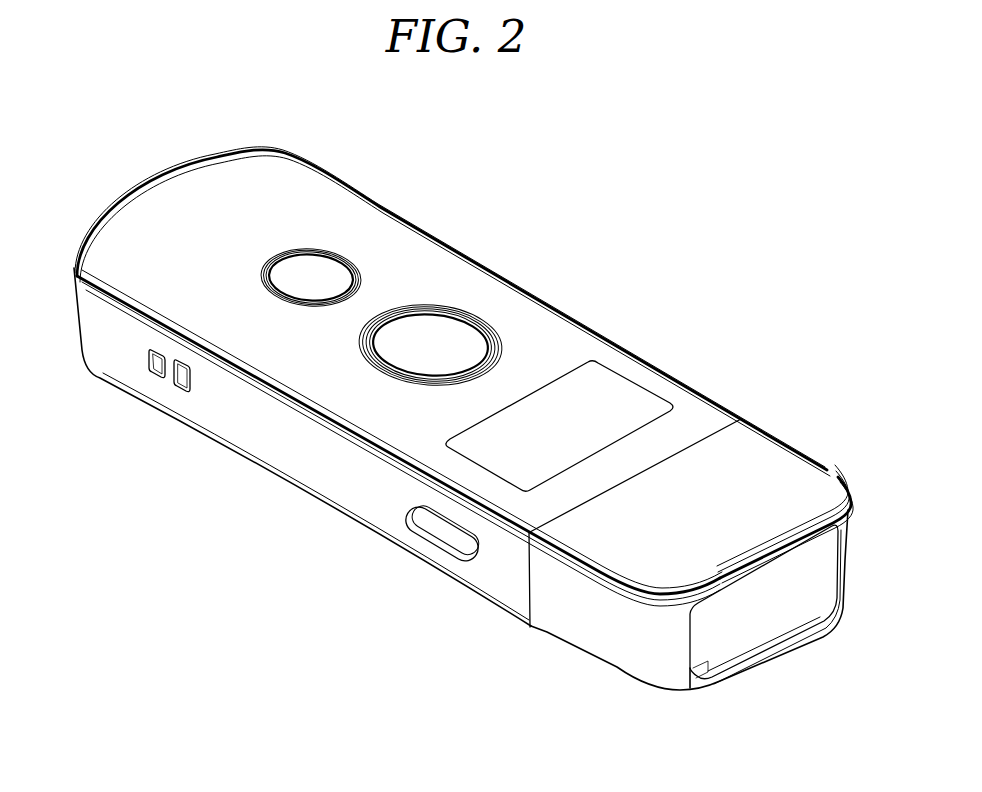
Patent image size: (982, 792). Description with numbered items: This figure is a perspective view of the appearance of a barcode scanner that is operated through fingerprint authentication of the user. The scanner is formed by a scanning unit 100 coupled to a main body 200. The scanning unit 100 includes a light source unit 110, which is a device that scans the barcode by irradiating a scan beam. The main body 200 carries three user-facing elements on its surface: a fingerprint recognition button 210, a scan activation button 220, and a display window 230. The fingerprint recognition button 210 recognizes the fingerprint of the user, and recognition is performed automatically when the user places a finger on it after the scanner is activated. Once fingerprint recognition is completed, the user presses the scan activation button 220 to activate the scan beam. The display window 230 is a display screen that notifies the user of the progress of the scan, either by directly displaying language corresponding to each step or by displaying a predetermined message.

The scanning unit 100 is at (747, 480).
The light source unit 110 is at (767, 603).
The main body 200 is at (190, 221).
The fingerprint recognition button 210 is at (432, 343).
The scan activation button 220 is at (315, 275).
The display window 230 is at (583, 415).